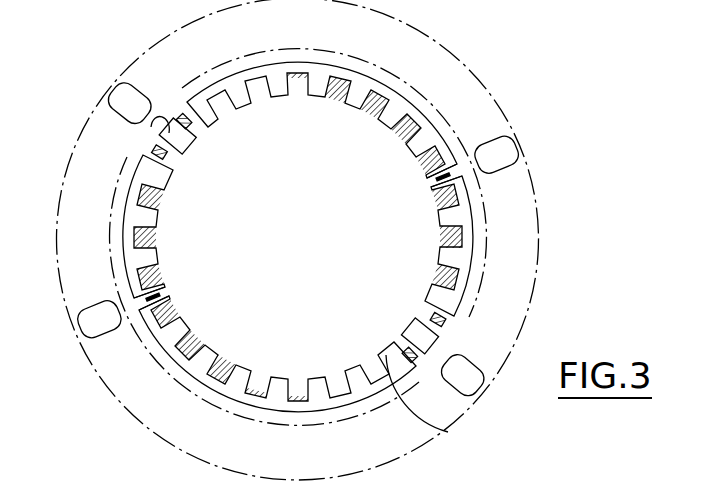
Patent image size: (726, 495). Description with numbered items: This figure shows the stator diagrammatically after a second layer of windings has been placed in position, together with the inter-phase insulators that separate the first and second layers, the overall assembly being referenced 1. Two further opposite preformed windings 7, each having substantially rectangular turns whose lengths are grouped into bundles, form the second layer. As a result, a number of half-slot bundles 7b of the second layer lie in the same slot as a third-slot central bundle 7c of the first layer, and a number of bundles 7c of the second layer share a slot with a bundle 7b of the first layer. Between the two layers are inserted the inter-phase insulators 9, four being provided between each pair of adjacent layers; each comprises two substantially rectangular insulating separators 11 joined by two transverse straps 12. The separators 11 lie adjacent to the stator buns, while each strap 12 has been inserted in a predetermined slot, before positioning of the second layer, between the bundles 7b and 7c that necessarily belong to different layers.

The stator support arm 1 is at (447, 432).
The preformed winding 7 is at (397, 79).
The bundle 7b is at (422, 162).
The central bundle 7c is at (449, 152).
The inter-phase insulator 9 is at (462, 52).
The separator 11 is at (470, 90).
The strap 12 is at (188, 127).